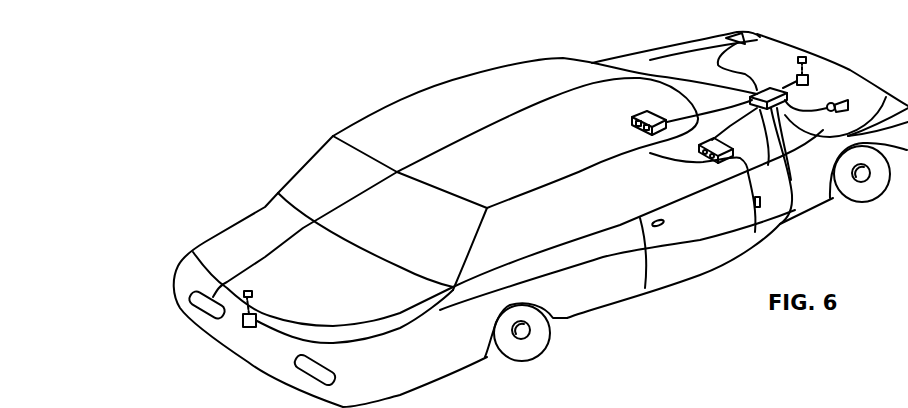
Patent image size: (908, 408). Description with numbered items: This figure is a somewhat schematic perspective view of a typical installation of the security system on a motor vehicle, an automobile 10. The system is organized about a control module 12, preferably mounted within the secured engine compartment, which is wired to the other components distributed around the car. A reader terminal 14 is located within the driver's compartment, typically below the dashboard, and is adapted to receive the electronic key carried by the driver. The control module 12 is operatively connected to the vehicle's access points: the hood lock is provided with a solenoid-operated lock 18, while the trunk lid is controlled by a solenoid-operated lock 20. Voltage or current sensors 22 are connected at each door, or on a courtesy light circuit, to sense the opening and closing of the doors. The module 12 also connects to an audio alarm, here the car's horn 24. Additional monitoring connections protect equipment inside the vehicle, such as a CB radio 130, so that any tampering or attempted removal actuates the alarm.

The automobile 10 is at (453, 76).
The control module 12 is at (773, 77).
The reader terminal 14 is at (634, 111).
The CB radio 130 is at (700, 163).
The solenoid-operated lock 18 is at (818, 66).
The solenoid-operated lock 20 is at (257, 313).
The voltage or current sensors 22 is at (750, 208).
The horn 24 is at (845, 90).